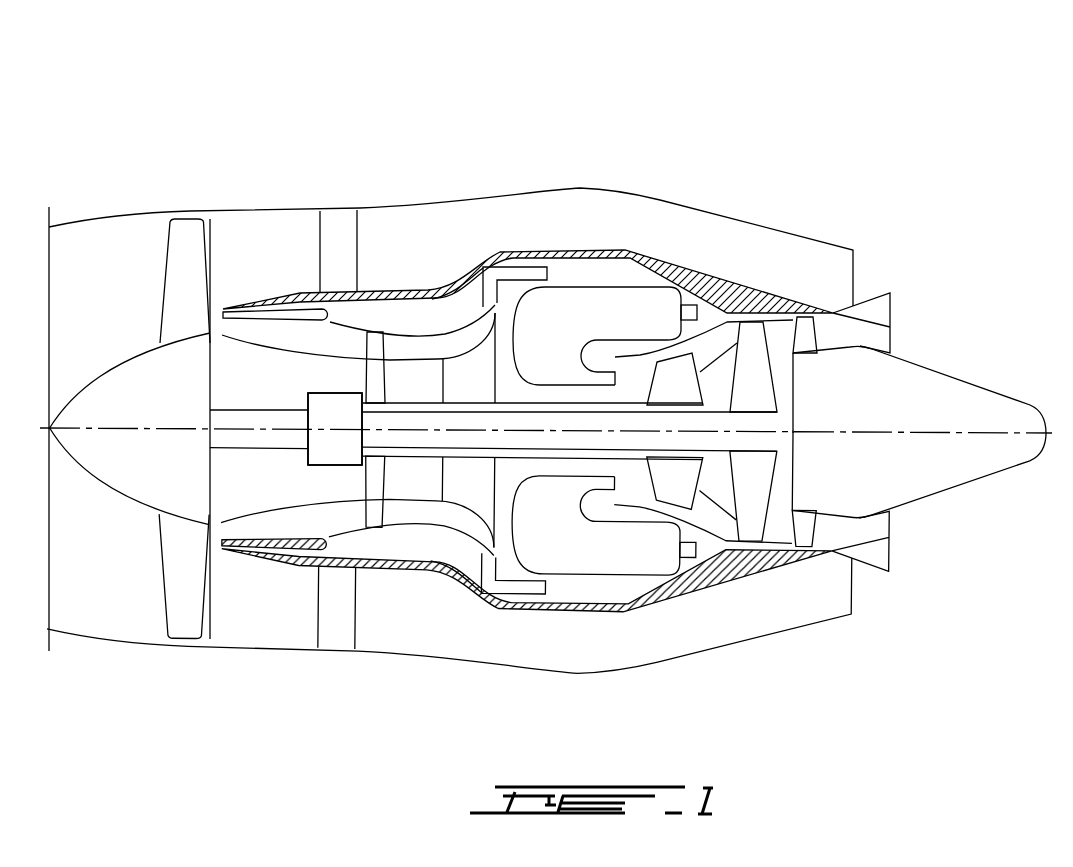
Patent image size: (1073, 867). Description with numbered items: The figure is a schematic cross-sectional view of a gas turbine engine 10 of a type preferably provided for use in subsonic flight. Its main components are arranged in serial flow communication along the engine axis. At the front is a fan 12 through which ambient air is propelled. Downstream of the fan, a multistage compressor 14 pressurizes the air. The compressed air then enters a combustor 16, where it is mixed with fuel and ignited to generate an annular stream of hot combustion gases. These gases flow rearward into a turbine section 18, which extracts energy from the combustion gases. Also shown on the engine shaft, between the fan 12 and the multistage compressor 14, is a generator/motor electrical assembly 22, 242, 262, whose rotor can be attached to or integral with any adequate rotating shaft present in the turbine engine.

The gas turbine engine 10 is at (732, 150).
The fan 12 is at (181, 566).
The multistage compressor 14 is at (428, 350).
The combustor 16 is at (598, 307).
The turbine section 18 is at (715, 490).
The generator/motor electrical assembly 22 is at (335, 410).
The generator/motor electrical assembly 242 is at (335, 410).
The generator/motor electrical assembly 262 is at (335, 410).